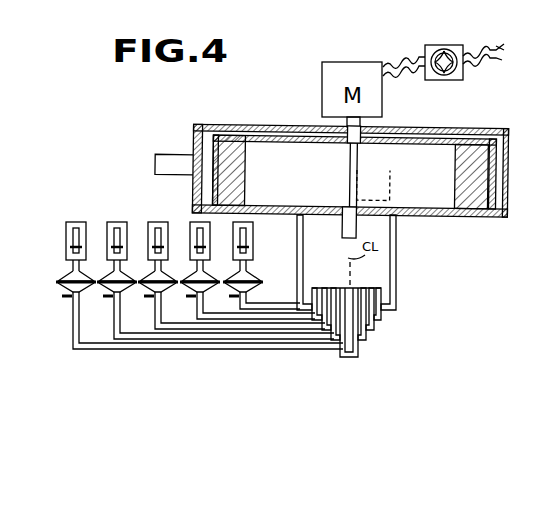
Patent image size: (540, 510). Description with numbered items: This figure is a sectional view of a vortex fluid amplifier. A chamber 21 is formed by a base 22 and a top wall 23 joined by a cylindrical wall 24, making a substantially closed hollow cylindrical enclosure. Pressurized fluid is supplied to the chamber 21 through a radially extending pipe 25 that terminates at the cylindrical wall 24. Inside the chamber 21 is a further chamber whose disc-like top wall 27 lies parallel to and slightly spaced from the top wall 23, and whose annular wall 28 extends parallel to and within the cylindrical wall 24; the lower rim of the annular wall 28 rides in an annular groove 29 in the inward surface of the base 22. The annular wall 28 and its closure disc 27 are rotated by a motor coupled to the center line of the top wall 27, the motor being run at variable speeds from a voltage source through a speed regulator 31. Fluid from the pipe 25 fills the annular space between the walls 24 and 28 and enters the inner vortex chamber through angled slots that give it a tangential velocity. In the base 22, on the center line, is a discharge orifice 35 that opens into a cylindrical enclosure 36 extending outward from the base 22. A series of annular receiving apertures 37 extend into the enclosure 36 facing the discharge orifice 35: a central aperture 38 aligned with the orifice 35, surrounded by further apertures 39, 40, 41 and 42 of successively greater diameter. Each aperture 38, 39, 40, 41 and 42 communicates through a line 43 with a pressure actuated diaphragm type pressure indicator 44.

The chamber 21 is at (332, 186).
The base 22 is at (436, 218).
The top wall 23 is at (419, 128).
The cylindrical wall 24 is at (508, 177).
The pipe 25 is at (160, 165).
The top wall 27 is at (269, 145).
The annular wall 28 is at (244, 178).
The annular groove 29 is at (487, 222).
The speed regulator 31 is at (445, 45).
The discharge orifice 35 is at (342, 228).
The cylindrical enclosure 36 is at (392, 284).
The annular receiving apertures 37 is at (389, 342).
The central aperture 38 is at (350, 291).
The annular receiving aperture 39 is at (362, 350).
The annular receiving aperture 40 is at (372, 331).
The annular receiving aperture 41 is at (381, 316).
The annular receiving aperture 42 is at (384, 305).
The line 43 is at (257, 299).
The pressure indicator 44 is at (255, 248).